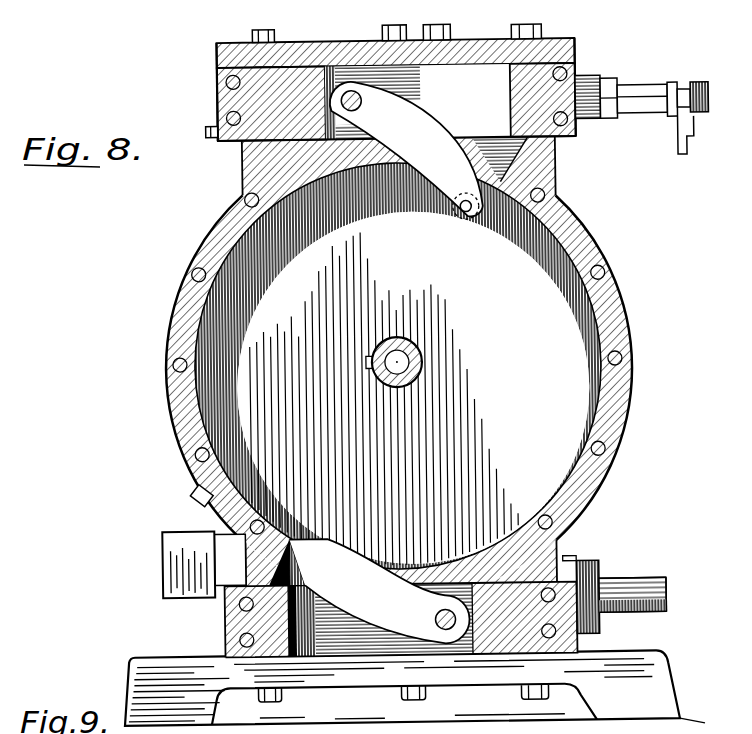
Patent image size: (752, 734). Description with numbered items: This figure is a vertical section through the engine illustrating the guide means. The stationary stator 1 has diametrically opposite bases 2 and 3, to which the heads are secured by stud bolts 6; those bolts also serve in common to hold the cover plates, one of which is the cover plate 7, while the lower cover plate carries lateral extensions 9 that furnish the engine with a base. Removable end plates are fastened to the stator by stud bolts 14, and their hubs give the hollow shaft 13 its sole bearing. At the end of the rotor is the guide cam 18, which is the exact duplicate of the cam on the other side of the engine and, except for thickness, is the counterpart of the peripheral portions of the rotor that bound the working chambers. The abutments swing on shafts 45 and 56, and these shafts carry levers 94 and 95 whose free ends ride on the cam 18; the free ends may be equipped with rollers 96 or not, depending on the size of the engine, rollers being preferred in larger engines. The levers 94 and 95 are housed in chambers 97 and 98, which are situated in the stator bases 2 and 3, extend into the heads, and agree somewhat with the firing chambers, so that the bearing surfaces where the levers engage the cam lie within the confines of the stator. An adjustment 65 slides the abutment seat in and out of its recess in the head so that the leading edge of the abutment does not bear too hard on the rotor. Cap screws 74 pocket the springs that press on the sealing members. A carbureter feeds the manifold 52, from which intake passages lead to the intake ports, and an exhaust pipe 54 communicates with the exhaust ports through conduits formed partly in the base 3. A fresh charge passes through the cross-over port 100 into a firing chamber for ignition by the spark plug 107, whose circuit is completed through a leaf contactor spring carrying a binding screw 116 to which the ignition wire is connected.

The stator 1 is at (222, 235).
The base 2 is at (245, 170).
The base 3 is at (538, 554).
The stud bolts 6 is at (265, 28).
The cover plate 7 is at (468, 52).
The lateral extensions 9 is at (163, 673).
The hollow shaft 13 is at (410, 350).
The stud bolts 14 is at (548, 198).
The guide cam 18 is at (566, 310).
The shaft 45 is at (355, 92).
The manifold 52 is at (172, 540).
The exhaust pipe 54 is at (632, 590).
The shaft 56 is at (445, 633).
The adjustment 65 is at (215, 134).
The cap screws 74 is at (404, 35).
The lever 94 is at (425, 128).
The lever 95 is at (353, 612).
The rollers 96 is at (462, 216).
The chamber 97 is at (506, 158).
The chamber 98 is at (305, 657).
The cross-over port 100 is at (706, 723).
The spark plug 107 is at (640, 92).
The binding screw 116 is at (225, 83).